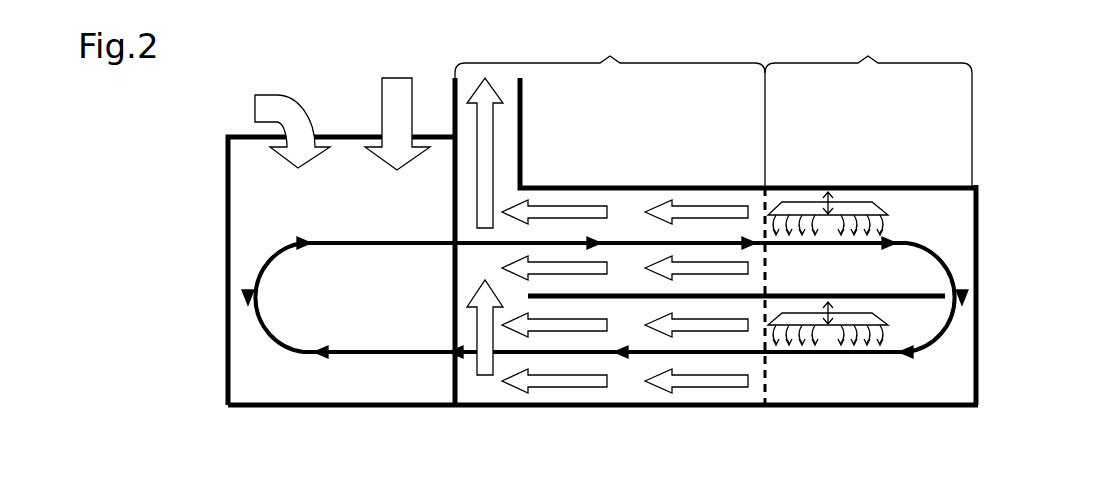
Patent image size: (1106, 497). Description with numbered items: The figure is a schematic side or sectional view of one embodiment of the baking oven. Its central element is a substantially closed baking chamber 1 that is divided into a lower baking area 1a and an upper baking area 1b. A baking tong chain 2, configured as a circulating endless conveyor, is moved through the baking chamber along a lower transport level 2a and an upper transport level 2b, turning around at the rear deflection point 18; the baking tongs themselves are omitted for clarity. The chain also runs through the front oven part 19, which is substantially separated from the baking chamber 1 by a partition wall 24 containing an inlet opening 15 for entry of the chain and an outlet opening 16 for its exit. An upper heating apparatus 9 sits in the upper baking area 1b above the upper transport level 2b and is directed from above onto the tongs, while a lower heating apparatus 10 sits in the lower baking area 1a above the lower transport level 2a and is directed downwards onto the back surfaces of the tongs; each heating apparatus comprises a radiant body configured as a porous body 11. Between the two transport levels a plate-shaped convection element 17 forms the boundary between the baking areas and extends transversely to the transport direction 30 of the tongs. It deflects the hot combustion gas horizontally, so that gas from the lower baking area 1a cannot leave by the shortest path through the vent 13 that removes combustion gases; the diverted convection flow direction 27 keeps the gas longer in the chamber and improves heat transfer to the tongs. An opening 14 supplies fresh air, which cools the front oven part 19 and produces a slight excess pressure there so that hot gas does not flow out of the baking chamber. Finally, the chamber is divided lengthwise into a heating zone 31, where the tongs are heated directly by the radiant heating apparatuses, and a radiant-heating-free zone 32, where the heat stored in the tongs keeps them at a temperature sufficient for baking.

The baking chamber 1 is at (947, 237).
The lower baking area 1a is at (943, 377).
The upper baking area 1b is at (945, 212).
The baking tong chain 2 is at (953, 270).
The lower transport level 2a is at (790, 355).
The upper transport level 2b is at (633, 243).
The upper heating apparatus 9 is at (862, 202).
The lower heating apparatus 10 is at (872, 357).
The porous body 11 is at (885, 213).
The vent 13 is at (507, 145).
The opening for supplying fresh air 14 is at (393, 122).
The inlet opening 15 is at (452, 246).
The outlet opening 16 is at (460, 362).
The convection element 17 is at (733, 300).
The rear deflection point 18 is at (953, 312).
The front oven part 19 is at (260, 378).
The partition wall 24 is at (440, 408).
The convection flow direction 27 is at (688, 295).
The transport direction 30 is at (750, 243).
The heating zone 31 is at (868, 110).
The radiant-heating-free zone 32 is at (610, 213).